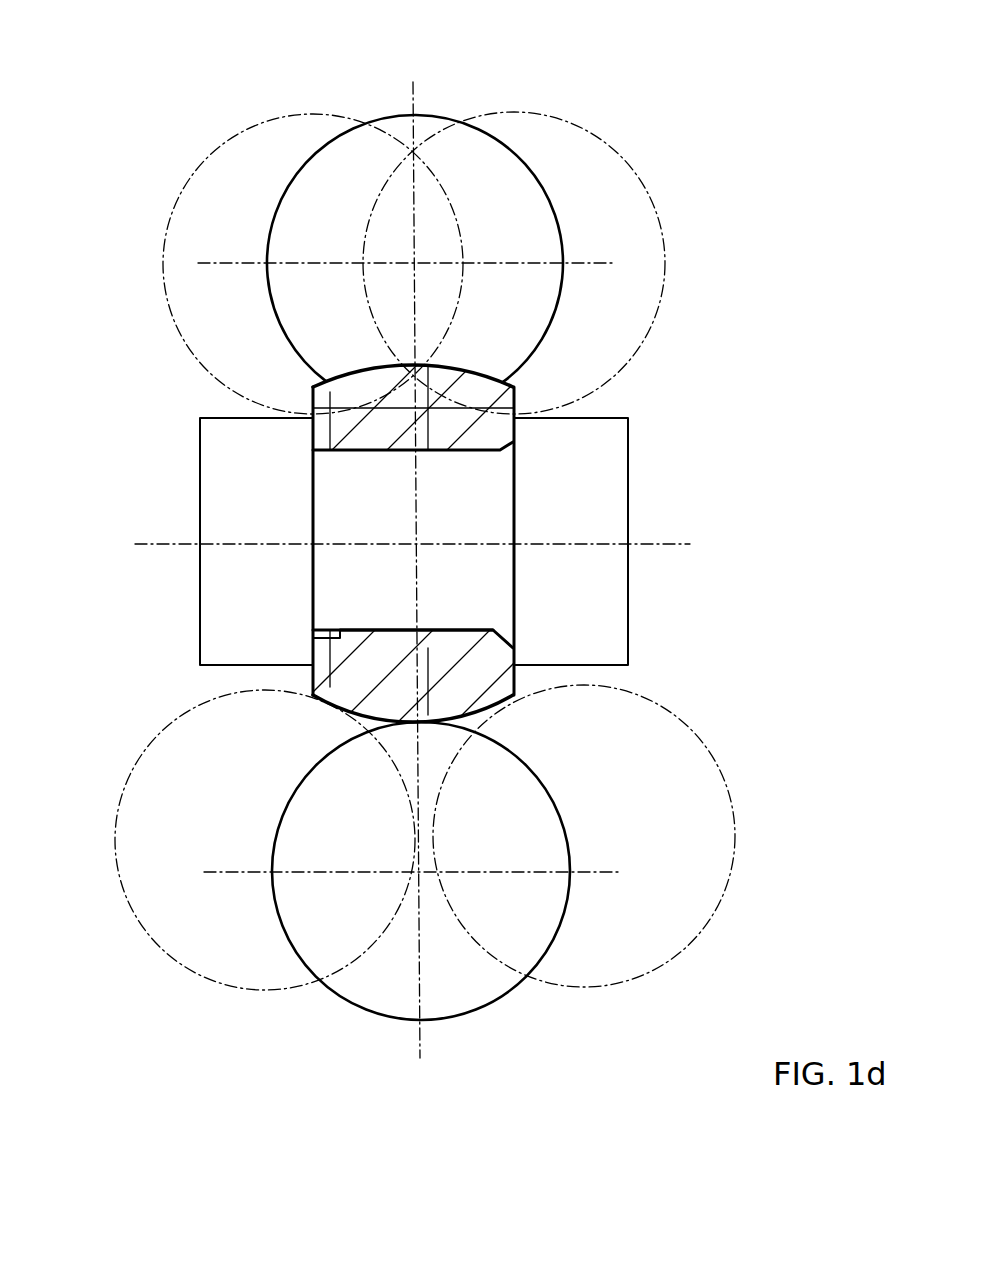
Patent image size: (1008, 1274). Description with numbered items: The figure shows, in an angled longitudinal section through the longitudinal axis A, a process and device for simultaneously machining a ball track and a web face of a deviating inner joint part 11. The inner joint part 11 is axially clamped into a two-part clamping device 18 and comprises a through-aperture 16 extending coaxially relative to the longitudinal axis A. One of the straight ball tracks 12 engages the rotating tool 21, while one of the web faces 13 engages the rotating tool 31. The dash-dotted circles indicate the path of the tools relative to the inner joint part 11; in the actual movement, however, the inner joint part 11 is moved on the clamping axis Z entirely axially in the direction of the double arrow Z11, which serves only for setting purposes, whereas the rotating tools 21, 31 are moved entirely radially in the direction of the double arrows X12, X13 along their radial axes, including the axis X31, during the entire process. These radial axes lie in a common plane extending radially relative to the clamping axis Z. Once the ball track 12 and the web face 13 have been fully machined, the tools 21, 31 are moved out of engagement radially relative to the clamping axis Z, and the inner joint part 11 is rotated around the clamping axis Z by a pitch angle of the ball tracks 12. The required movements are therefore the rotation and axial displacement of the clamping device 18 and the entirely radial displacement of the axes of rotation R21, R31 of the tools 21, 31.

The inner joint part 11 is at (553, 411).
The ball track 12 is at (518, 384).
The web face 13 is at (497, 708).
The through-aperture 16 is at (427, 628).
The clamping device 18 is at (623, 487).
The rotating tool 21 is at (524, 146).
The rotating tool 31 is at (578, 795).
The longitudinal axis A is at (428, 543).
The axis of rotation R21 is at (415, 263).
The axis of rotation R31 is at (421, 872).
The double arrow X12 is at (408, 13).
The double arrow X13 is at (418, 1074).
The radial axis X31 is at (421, 1032).
The double arrow Z11 is at (97, 550).
The clamping axis Z is at (177, 542).